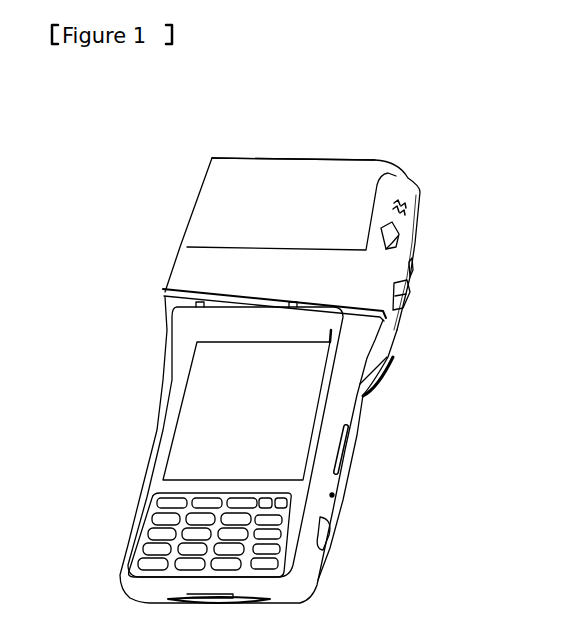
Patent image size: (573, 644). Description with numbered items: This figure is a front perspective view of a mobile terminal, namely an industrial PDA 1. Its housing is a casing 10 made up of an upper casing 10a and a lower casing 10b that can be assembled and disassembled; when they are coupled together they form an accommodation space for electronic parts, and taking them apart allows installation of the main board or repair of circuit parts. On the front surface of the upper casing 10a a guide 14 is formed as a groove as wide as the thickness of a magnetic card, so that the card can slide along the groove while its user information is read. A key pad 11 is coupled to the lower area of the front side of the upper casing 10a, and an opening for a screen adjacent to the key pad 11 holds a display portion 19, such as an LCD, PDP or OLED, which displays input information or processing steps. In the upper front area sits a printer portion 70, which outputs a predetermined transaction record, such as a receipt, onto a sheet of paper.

The industrial PDA 1 is at (121, 149).
The printer portion 70 is at (328, 191).
The guide 14 is at (360, 295).
The display portion 19 is at (197, 421).
The casing 10 is at (425, 405).
The upper casing 10a is at (345, 404).
The lower casing 10b is at (350, 443).
The key pad 11 is at (170, 519).